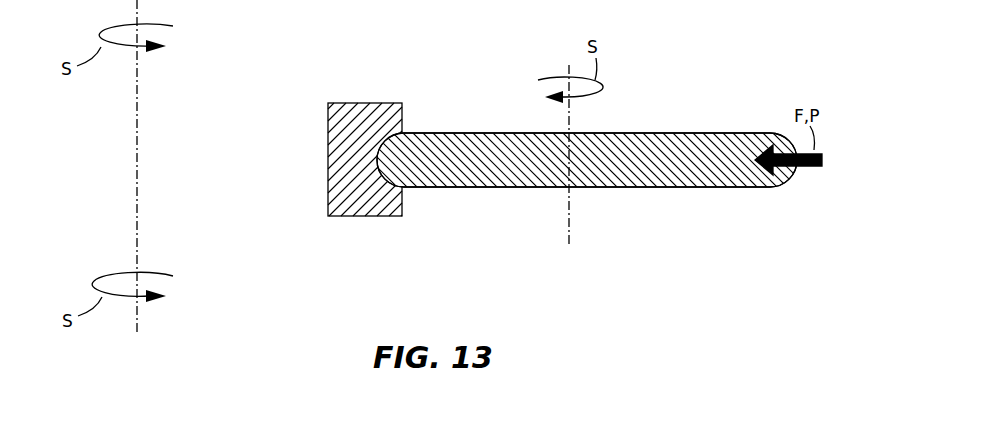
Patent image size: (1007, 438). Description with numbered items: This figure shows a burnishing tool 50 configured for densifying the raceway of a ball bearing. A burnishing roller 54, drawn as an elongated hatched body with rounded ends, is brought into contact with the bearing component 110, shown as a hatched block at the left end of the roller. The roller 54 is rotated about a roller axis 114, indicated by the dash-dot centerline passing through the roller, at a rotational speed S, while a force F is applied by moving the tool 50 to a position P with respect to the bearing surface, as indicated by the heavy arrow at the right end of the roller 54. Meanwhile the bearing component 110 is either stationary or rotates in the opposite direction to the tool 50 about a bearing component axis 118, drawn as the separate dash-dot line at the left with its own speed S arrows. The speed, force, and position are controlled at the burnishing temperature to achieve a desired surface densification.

The burnishing tool 50 is at (660, 48).
The burnishing roller 54 is at (708, 188).
The bearing component 110 is at (327, 128).
The roller axis 114 is at (572, 212).
The bearing component axis 118 is at (135, 167).